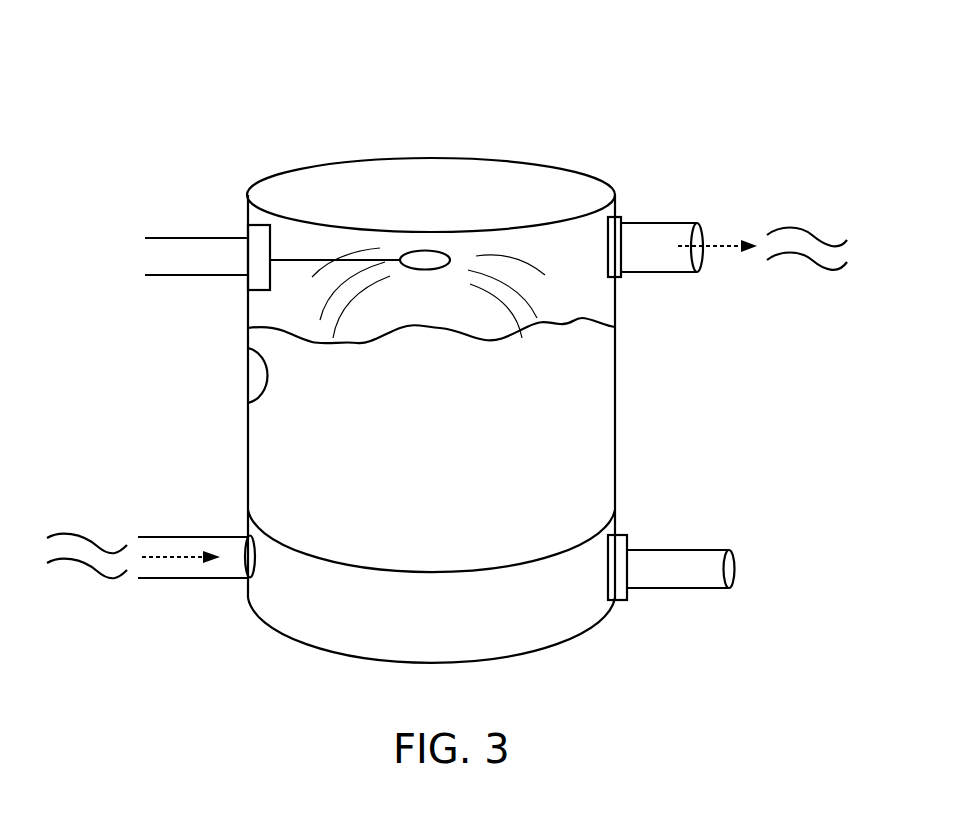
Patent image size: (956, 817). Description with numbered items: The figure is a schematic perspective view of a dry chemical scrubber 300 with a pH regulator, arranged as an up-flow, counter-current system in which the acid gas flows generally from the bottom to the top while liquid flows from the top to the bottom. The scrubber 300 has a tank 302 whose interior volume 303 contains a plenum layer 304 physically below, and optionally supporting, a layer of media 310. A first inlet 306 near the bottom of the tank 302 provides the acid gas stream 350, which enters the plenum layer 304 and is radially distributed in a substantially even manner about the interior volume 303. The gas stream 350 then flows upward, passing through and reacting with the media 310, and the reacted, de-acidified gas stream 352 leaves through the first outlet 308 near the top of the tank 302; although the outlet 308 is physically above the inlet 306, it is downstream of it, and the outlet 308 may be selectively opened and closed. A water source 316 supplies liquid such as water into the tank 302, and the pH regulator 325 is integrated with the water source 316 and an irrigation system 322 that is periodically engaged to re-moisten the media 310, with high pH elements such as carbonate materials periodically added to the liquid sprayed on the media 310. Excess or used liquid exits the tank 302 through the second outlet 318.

The dry chemical scrubber 300 is at (186, 58).
The tank 302 is at (617, 473).
The interior volume 303 is at (248, 348).
The plenum layer 304 is at (293, 599).
The first inlet 306 is at (213, 537).
The first outlet 308 is at (653, 220).
The media 310 is at (575, 408).
The water source 316 is at (227, 238).
The second outlet 318 is at (662, 547).
The irrigation system 322 is at (408, 252).
The pH regulator 325 is at (497, 248).
The gas stream 350 is at (97, 507).
The de-acidified gas stream 352 is at (794, 205).